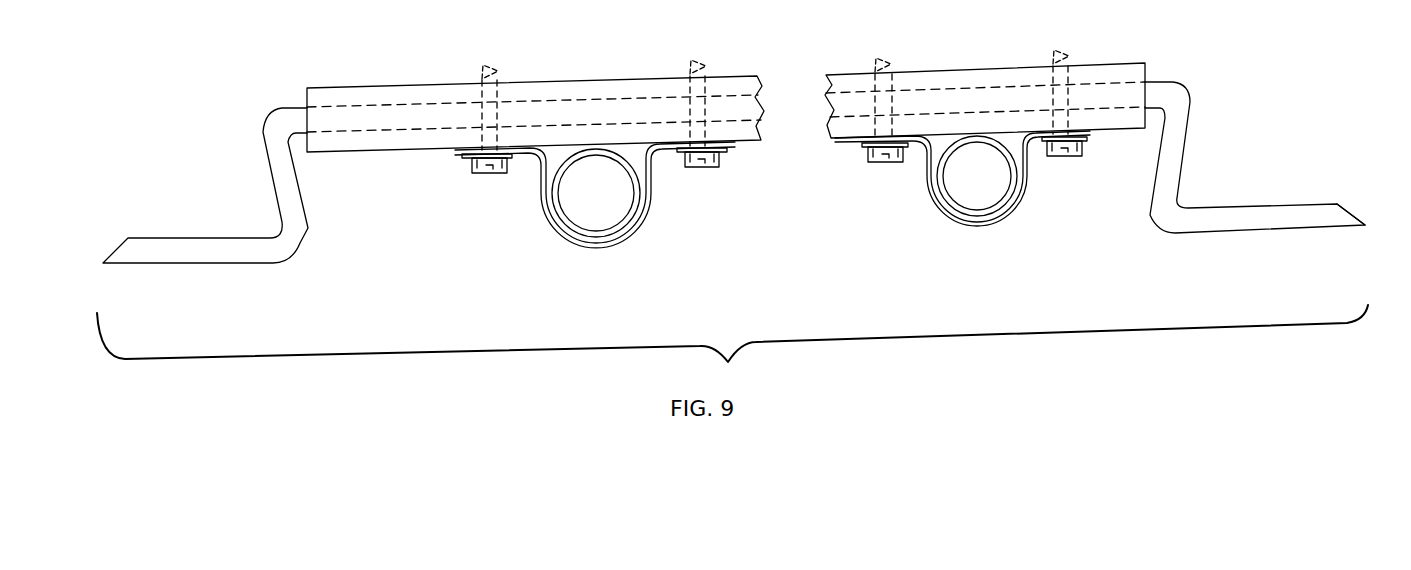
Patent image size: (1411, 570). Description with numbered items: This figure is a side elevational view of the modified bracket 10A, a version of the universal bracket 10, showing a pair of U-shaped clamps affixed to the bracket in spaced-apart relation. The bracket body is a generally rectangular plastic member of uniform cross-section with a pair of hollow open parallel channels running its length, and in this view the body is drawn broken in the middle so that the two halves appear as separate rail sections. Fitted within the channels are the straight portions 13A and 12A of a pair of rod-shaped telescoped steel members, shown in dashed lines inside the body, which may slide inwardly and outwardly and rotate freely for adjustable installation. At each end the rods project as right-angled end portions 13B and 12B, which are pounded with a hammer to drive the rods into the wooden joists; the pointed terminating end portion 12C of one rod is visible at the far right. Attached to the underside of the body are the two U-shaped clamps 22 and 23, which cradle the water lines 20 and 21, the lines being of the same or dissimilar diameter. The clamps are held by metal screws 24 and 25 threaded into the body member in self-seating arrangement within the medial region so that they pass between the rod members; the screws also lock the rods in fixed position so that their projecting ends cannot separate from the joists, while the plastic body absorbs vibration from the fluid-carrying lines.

The universal bracket 10 is at (183, 185).
The bracket (modified embodiment) 10A is at (746, 55).
The straight portion of rod-shaped member 13A is at (335, 104).
The right-angled end portion 13B is at (277, 205).
The straight portion of rod-shaped member 12A is at (1090, 88).
The right-angled end portion 12B is at (1227, 203).
The pointed terminating end portion 12C is at (1343, 213).
The water line 20 is at (568, 247).
The U-shaped clamp 22 is at (625, 247).
The water line 21 is at (955, 220).
The U-shaped clamp 23 is at (1002, 217).
The screw 24 is at (492, 178).
The screw 25 is at (698, 172).